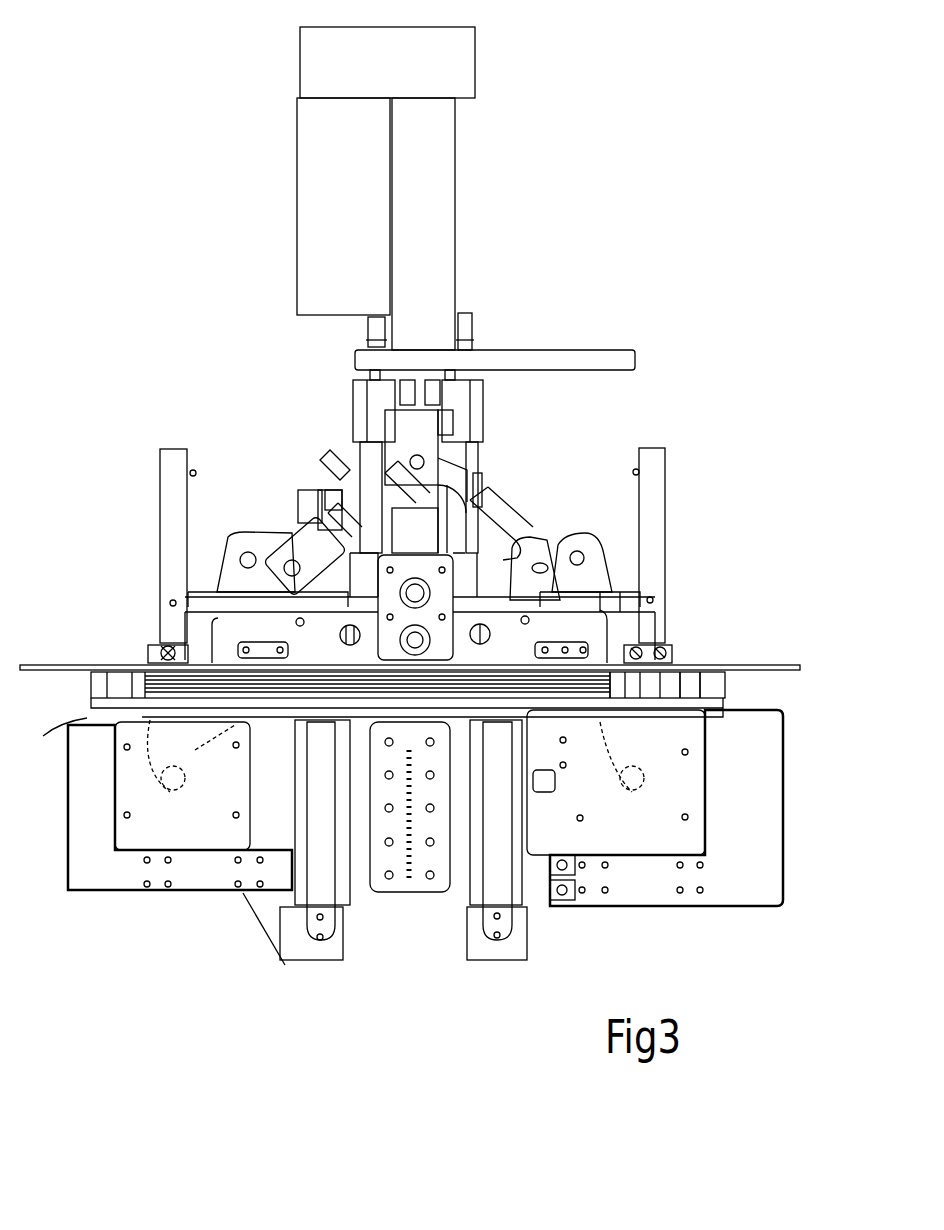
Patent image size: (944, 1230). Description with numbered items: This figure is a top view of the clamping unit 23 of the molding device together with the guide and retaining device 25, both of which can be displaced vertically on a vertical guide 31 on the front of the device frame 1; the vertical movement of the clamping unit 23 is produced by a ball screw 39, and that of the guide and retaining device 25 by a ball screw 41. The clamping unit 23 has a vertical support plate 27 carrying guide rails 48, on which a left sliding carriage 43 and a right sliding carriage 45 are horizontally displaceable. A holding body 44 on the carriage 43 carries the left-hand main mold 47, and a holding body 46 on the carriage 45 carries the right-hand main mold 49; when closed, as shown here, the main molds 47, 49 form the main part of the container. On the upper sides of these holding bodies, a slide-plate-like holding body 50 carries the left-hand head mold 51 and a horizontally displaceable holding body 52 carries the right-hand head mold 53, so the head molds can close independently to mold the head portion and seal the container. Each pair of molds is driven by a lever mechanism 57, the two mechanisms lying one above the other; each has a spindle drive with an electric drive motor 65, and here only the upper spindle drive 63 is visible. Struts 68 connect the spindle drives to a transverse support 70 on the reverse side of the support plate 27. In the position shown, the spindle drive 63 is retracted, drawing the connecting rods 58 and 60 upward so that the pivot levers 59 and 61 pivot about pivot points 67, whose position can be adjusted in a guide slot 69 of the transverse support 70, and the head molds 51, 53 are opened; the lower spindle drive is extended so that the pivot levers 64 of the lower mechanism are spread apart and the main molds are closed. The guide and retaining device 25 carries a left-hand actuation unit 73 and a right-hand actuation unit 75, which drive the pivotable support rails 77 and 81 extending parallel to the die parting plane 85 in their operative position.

The device frame 1 is at (660, 510).
The clamping unit 23 is at (138, 585).
The guide and retaining device 25 is at (245, 950).
The support plate 27 is at (90, 663).
The vertical guide 31 is at (152, 647).
The ball screw 39 is at (420, 585).
The ball screw 41 is at (430, 645).
The sliding carriage 43 is at (100, 707).
The holding body 44 is at (100, 878).
The sliding carriage 45 is at (722, 702).
The holding body 46 is at (747, 855).
The left-hand main mold 47 is at (345, 882).
The guide rails 48 is at (650, 672).
The right-hand main mold 49 is at (430, 885).
The holding body 50 is at (128, 782).
The left-hand head mold 51 is at (290, 835).
The holding body 52 is at (670, 778).
The right-hand head mold 53 is at (530, 805).
The lever mechanism 57 is at (318, 457).
The connecting rod 58 is at (343, 490).
The pivot lever 59 is at (90, 722).
The connecting rod 60 is at (492, 530).
The pivot lever 61 is at (637, 597).
The spindle drive 63 is at (420, 333).
The pivot lever 64 is at (220, 586).
The electric drive motor 65 is at (337, 170).
The pivot point 67 is at (235, 562).
The strut 68 is at (363, 470).
The guide slot 69 is at (273, 642).
The transverse support 70 is at (320, 635).
The left-hand actuation unit 73 is at (280, 908).
The right-hand actuation unit 75 is at (530, 915).
The pivotable support rail 77 is at (322, 852).
The pivotable support rail 81 is at (495, 882).
The die parting plane 85 is at (408, 700).